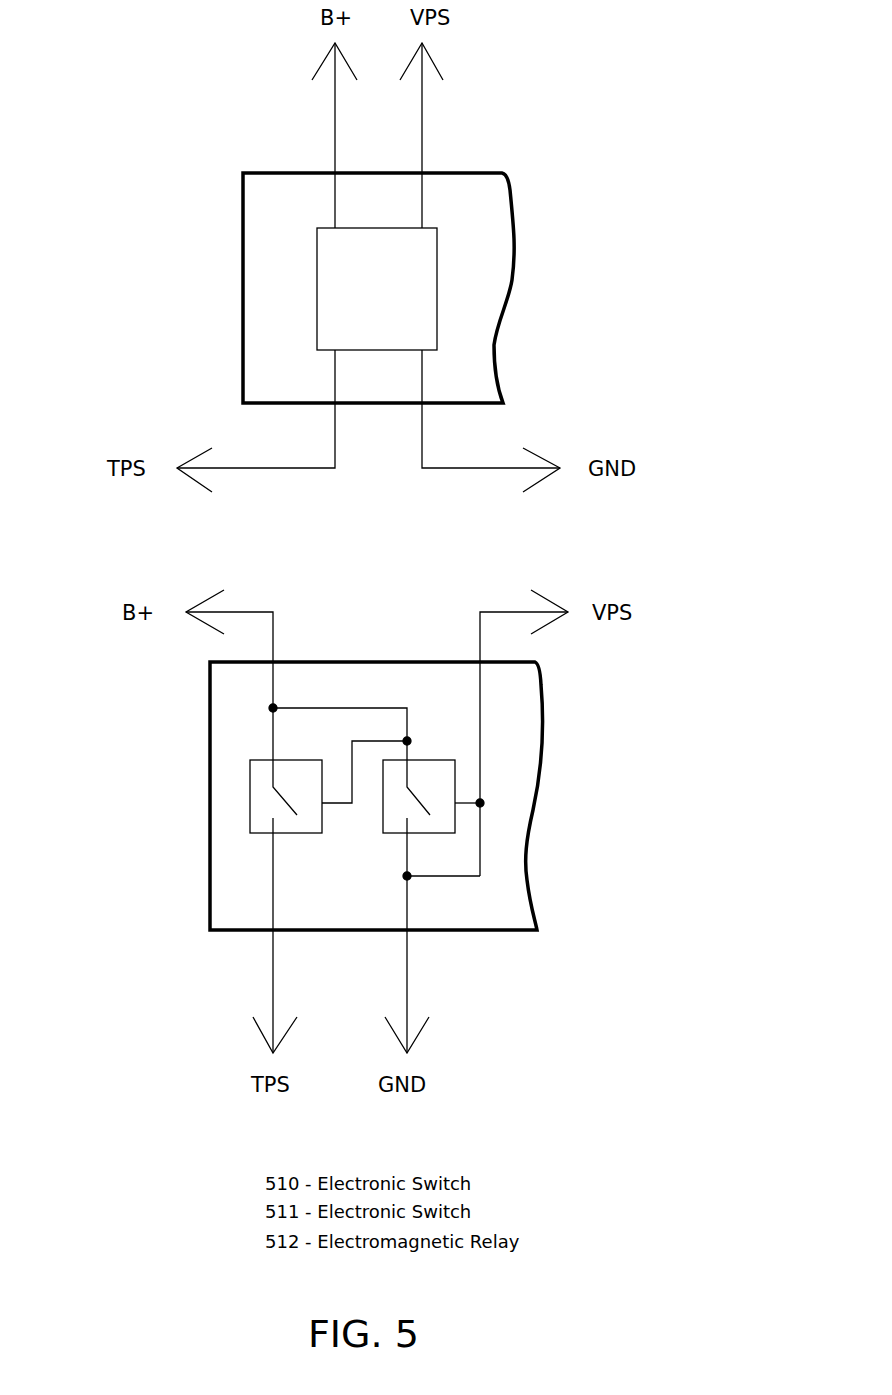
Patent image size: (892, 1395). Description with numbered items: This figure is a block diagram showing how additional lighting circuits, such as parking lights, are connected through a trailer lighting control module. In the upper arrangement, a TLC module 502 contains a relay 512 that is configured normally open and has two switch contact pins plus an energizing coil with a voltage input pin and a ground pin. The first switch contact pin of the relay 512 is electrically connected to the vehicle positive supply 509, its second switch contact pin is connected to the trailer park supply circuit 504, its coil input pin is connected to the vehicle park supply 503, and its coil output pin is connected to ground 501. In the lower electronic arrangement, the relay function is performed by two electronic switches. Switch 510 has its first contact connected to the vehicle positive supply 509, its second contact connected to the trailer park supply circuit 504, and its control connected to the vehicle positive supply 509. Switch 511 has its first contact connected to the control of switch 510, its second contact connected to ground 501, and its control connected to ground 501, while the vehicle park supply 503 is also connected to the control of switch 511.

The ground 501 is at (455, 468).
The TLC module 502 is at (243, 258).
The vehicle park supply 503 is at (422, 125).
The trailer park supply circuit 504 is at (307, 468).
The vehicle positive supply 509 is at (335, 127).
The electronic switch 510 is at (300, 833).
The electronic switch 511 is at (392, 833).
The relay 512 is at (440, 258).